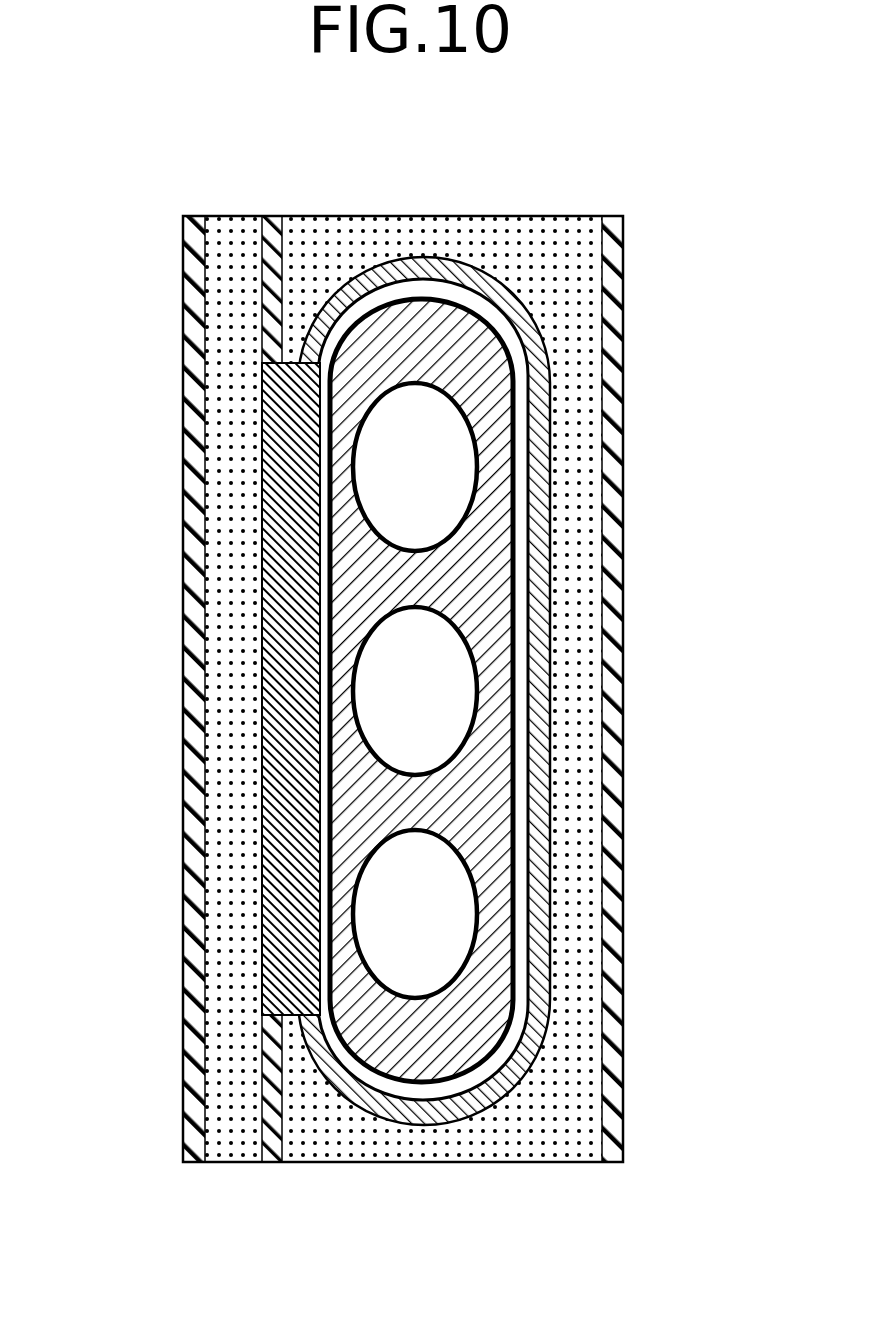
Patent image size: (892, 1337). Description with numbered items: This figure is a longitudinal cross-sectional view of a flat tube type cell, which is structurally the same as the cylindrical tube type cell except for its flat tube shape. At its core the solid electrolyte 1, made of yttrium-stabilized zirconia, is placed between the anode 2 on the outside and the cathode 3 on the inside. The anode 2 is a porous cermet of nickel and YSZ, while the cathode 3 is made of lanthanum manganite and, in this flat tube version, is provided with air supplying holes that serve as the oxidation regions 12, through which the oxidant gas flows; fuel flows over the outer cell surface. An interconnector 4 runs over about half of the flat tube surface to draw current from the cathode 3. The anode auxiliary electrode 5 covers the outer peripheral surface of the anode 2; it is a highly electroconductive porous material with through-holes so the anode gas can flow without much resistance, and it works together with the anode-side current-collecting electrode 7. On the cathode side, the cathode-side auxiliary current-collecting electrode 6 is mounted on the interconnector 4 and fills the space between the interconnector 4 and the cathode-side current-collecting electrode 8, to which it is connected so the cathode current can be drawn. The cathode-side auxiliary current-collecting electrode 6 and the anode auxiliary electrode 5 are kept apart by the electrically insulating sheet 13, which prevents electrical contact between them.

The solid electrolyte 1 is at (475, 295).
The anode 2 is at (508, 290).
The cathode 3 is at (425, 262).
The interconnector 4 is at (257, 368).
The anode auxiliary electrode 5 is at (577, 808).
The cathode-side auxiliary current-collecting electrode 6 is at (228, 822).
The anode-side current-collecting electrode 7 is at (622, 650).
The cathode-side current-collecting electrode 8 is at (183, 640).
The oxidation region 12 is at (432, 935).
The electrically insulating sheet 13 is at (270, 1118).